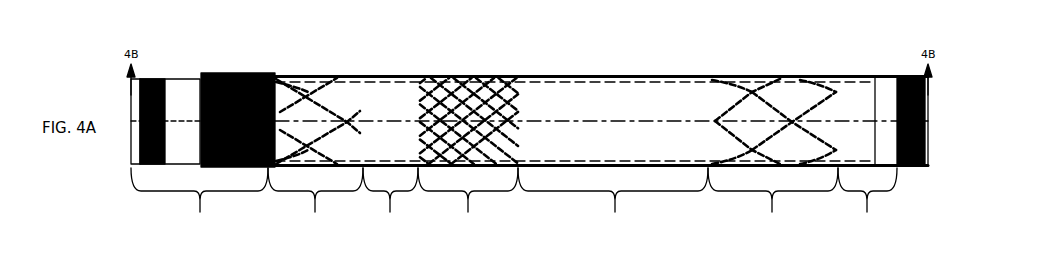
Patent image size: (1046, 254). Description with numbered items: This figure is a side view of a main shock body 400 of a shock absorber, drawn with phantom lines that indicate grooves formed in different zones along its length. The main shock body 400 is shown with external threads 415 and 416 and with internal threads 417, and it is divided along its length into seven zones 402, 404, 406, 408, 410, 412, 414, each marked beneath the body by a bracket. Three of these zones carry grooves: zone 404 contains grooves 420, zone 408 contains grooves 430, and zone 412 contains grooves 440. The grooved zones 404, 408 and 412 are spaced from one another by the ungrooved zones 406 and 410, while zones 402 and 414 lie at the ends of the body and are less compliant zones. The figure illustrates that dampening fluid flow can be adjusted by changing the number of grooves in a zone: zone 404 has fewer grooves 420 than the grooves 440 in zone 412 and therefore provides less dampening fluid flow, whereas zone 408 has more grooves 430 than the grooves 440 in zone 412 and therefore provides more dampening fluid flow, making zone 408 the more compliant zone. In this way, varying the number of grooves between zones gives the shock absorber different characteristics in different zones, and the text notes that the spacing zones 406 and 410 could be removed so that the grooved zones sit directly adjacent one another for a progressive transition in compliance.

The main shock body 400 is at (677, 75).
The zone 402 is at (199, 205).
The zone 404 is at (315, 205).
The zone 406 is at (390, 205).
The zone 408 is at (468, 205).
The zone 410 is at (613, 205).
The zone 412 is at (773, 205).
The zone 414 is at (867, 205).
The external threads 415 is at (158, 77).
The external threads 416 is at (252, 72).
The internal threads 417 is at (908, 76).
The grooves 420 is at (340, 113).
The grooves 430 is at (490, 107).
The grooves 440 is at (807, 74).